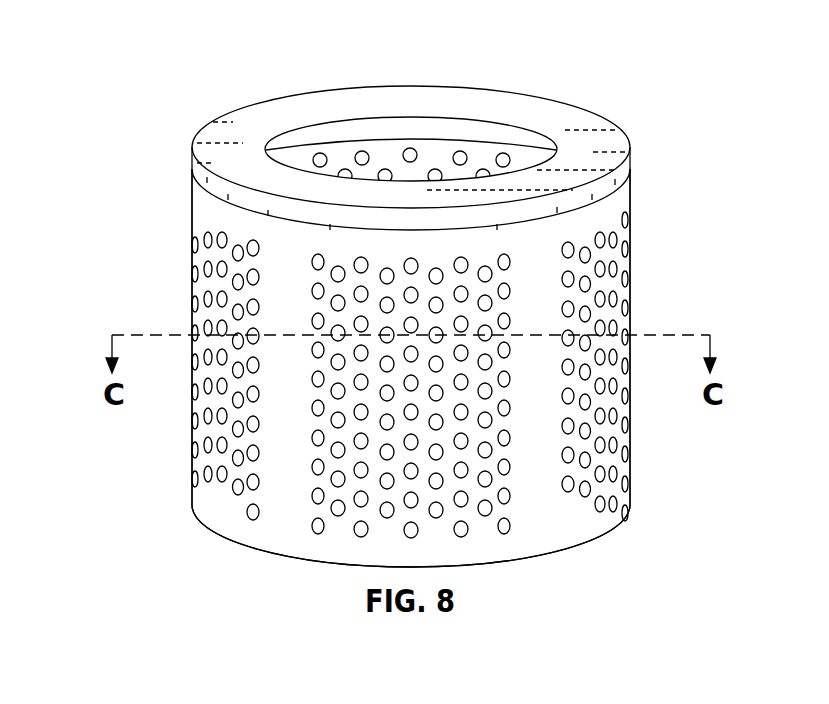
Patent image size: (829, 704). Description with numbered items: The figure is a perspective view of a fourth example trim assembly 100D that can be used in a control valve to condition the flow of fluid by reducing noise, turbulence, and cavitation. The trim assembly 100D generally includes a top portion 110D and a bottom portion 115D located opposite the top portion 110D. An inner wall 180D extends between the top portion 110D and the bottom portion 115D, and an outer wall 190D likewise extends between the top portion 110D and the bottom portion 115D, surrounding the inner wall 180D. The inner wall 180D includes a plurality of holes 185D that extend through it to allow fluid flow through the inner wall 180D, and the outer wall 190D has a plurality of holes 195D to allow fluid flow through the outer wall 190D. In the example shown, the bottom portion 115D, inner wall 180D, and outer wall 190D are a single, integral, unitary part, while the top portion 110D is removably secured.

The trim assembly 100D is at (150, 52).
The top portion 110D is at (213, 140).
The bottom portion 115D is at (272, 537).
The inner wall 180D is at (523, 160).
The holes 185D is at (388, 150).
The outer wall 190D is at (625, 298).
The holes 195D is at (605, 237).